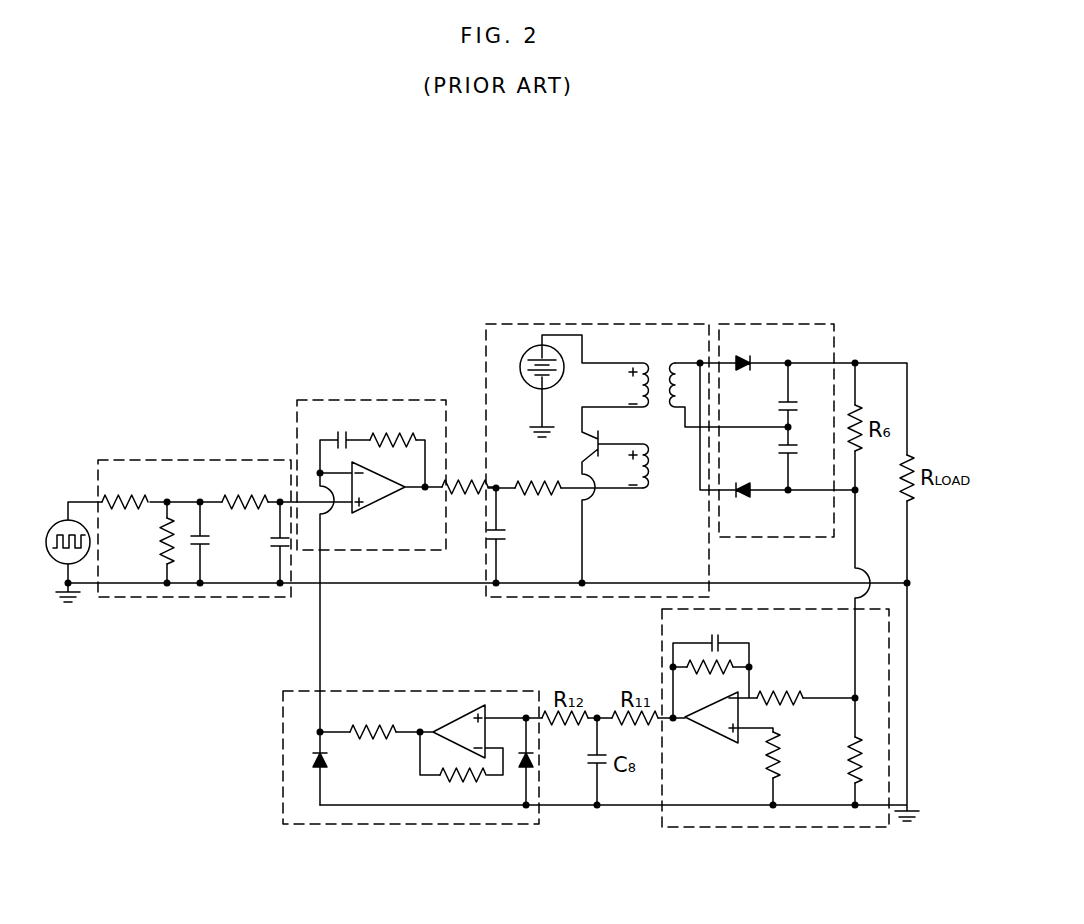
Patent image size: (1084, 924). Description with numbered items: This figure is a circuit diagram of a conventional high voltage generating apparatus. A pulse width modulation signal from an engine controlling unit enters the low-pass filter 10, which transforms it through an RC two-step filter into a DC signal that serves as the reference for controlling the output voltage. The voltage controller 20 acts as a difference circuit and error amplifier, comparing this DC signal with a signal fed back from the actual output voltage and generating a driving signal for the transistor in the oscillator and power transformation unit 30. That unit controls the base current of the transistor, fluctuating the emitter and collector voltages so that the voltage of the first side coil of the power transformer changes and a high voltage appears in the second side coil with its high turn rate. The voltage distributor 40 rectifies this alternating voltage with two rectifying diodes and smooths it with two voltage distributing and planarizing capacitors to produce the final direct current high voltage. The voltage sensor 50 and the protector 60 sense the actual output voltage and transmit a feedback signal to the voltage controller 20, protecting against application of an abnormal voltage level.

The low-pass filter 10 is at (193, 460).
The voltage controller 20 is at (370, 399).
The oscillator and power transformation unit 30 is at (595, 323).
The voltage distributor 40 is at (775, 324).
The voltage sensor 50 is at (768, 826).
The protector 60 is at (408, 825).